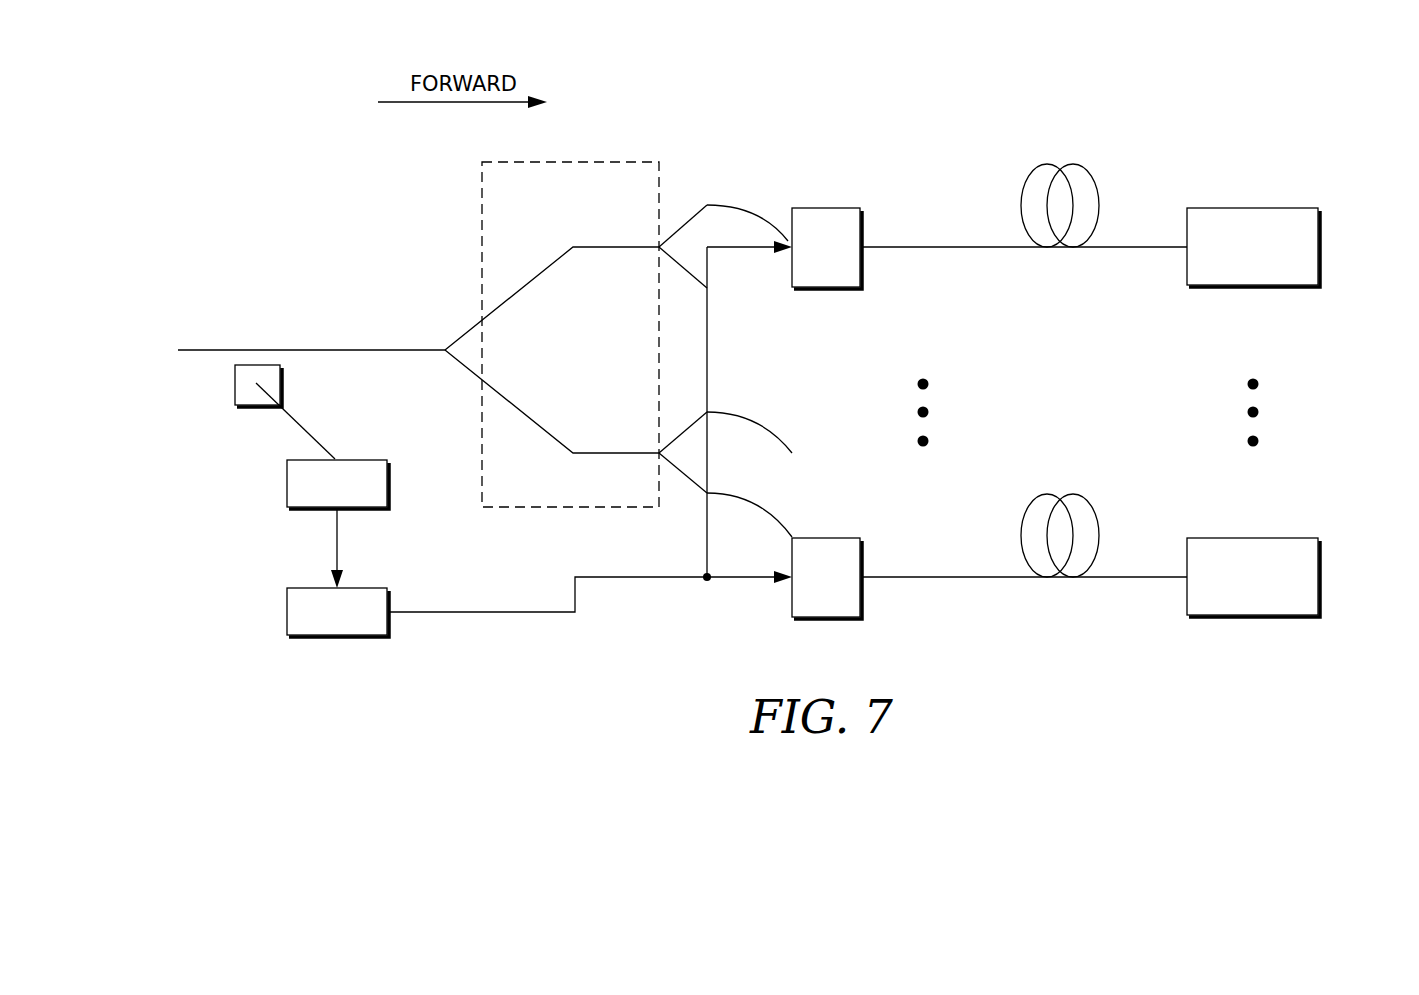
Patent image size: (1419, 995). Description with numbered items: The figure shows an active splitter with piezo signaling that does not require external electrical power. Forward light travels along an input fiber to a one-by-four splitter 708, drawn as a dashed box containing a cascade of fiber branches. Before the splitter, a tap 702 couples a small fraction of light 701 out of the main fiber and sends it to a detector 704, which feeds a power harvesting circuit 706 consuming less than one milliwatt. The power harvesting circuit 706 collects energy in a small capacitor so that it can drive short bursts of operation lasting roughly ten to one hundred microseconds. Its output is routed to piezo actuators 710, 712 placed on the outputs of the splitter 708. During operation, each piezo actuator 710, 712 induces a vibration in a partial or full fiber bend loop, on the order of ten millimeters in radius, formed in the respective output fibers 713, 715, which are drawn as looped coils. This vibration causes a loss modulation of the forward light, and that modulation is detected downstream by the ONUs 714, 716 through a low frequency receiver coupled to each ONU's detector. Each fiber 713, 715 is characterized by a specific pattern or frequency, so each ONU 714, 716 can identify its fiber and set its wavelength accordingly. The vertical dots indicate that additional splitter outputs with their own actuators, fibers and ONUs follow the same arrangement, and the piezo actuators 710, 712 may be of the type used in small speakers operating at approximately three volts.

The fraction of light 701 is at (317, 441).
The tap 702 is at (342, 412).
The detector 704 is at (306, 460).
The power harvesting circuit 706 is at (306, 588).
The 1×N splitter 708 is at (497, 162).
The piezo actuator 710 is at (845, 208).
The piezo actuator 712 is at (845, 538).
The output fiber 713 is at (975, 247).
The ONU 714 is at (1302, 208).
The output fiber 715 is at (975, 577).
The ONU 716 is at (1302, 538).